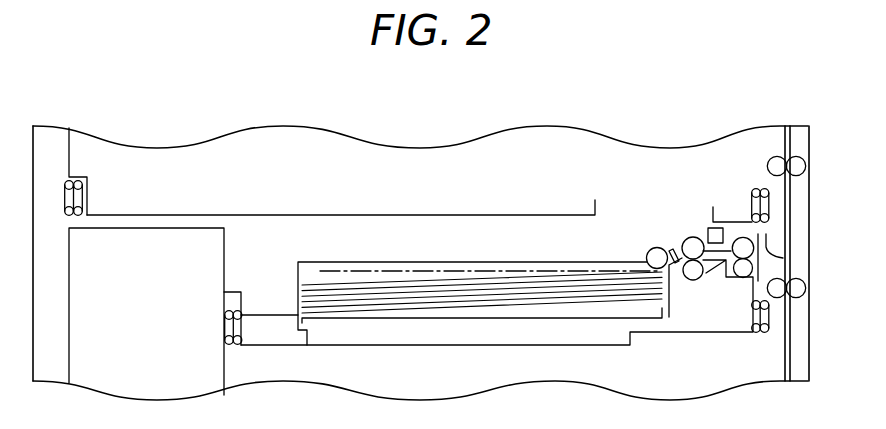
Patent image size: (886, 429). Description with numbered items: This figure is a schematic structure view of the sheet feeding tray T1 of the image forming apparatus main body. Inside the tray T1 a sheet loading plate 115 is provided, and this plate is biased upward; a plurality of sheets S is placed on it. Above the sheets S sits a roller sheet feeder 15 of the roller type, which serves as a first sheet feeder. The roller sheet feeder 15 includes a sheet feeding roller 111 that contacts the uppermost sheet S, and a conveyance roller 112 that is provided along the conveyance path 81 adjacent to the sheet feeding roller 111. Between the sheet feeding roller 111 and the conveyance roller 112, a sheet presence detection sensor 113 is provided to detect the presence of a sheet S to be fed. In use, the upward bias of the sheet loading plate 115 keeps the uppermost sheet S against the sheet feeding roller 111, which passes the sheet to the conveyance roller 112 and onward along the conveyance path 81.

The roller sheet feeder 15 is at (633, 188).
The sheet feeding roller 111 is at (657, 257).
The conveyance roller 112 is at (693, 247).
The sheet presence detection sensor 113 is at (675, 252).
The sheet loading plate 115 is at (423, 318).
The sheet S is at (472, 277).
The tray T1 is at (653, 308).
The conveyance path 81 is at (766, 262).